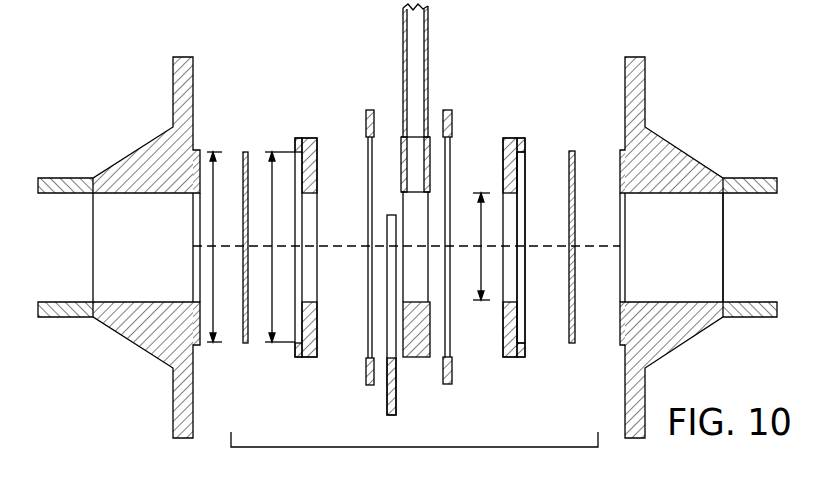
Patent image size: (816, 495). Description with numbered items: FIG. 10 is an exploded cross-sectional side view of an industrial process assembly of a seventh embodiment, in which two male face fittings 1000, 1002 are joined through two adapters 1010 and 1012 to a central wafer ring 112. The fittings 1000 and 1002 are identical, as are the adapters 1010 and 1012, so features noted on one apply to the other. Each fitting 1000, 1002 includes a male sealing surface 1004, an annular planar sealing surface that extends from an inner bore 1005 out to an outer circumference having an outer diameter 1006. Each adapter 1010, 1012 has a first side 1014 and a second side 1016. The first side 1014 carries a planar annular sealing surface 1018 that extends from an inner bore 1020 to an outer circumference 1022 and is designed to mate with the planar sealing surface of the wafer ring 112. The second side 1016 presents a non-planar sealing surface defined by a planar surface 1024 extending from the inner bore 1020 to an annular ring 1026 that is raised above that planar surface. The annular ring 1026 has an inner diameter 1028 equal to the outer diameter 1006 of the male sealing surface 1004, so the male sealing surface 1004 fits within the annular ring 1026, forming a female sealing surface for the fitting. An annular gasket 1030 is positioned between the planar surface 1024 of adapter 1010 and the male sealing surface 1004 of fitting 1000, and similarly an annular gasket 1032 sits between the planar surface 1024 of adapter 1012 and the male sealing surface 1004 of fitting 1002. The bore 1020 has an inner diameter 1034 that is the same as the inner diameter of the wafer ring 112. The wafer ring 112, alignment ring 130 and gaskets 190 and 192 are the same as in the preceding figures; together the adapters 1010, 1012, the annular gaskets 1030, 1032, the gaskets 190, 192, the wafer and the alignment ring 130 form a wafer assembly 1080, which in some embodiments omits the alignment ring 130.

The male face fitting 1000 is at (195, 428).
The male face fitting 1002 is at (647, 396).
The male sealing surface 1004 is at (622, 342).
The inner bore 1005 is at (698, 255).
The outer diameter 1006 is at (222, 247).
The adapter 1010 is at (308, 358).
The adapter 1012 is at (515, 360).
The first side 1014 is at (494, 137).
The second side 1016 is at (529, 139).
The planar annular sealing surface 1018 is at (514, 242).
The inner bore 1020 is at (324, 249).
The outer circumference 1022 is at (305, 137).
The planar surface 1024 is at (518, 323).
The annular ring 1026 is at (522, 345).
The inner diameter 1028 is at (273, 247).
The annular gasket 1030 is at (245, 343).
The annular gasket 1032 is at (572, 150).
The inner diameter 1034 is at (480, 246).
The wafer assembly 1080 is at (300, 447).
The wafer ring 112 is at (412, 358).
The alignment ring 130 is at (398, 416).
The gasket 190 is at (370, 385).
The gasket 192 is at (448, 383).